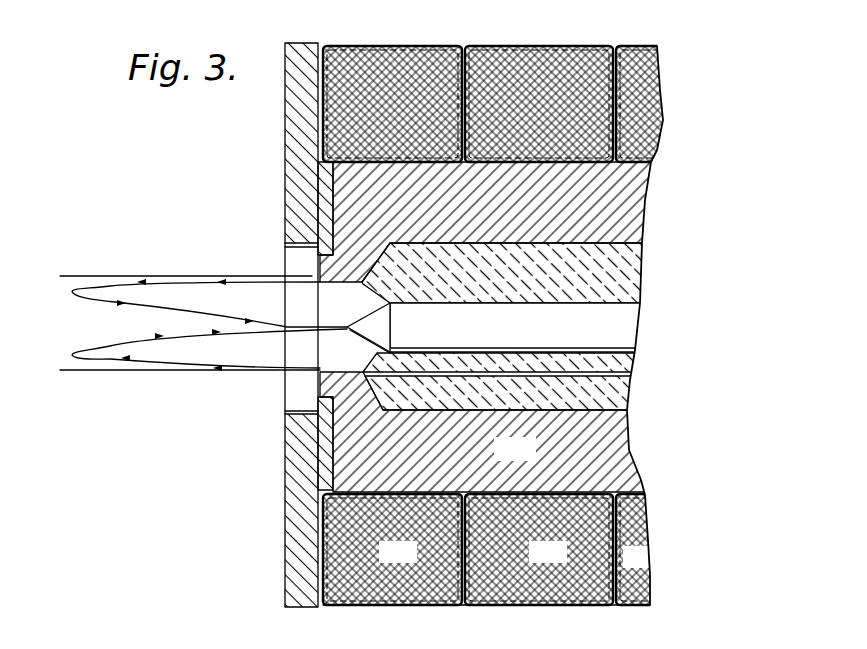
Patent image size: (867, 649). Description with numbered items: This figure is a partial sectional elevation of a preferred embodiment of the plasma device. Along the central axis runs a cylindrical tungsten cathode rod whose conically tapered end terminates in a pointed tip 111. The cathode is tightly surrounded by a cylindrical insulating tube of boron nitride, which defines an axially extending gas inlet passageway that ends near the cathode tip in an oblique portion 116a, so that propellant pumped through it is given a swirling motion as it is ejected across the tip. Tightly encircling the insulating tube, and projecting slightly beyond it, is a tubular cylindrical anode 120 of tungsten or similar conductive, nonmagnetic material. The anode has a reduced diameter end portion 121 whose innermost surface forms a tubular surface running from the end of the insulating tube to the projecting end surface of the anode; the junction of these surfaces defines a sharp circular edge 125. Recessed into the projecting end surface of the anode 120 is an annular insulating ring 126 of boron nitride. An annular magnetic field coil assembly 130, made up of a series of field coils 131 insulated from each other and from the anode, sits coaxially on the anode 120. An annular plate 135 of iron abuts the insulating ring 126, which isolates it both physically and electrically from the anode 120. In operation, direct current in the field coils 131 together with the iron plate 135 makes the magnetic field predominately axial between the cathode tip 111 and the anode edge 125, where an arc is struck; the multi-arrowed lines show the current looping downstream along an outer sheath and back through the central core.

The pointed tip 111 is at (368, 328).
The oblique portion 116a is at (378, 360).
The tubular cylindrical anode 120 is at (531, 458).
The reduced diameter end portion 121 is at (354, 279).
The sharp circular edge 125 is at (318, 372).
The annular insulating ring 126 is at (318, 409).
The annular magnetic field coil assembly 130 is at (483, 606).
The field coils 131 is at (412, 560).
The annular plate 135 is at (288, 479).